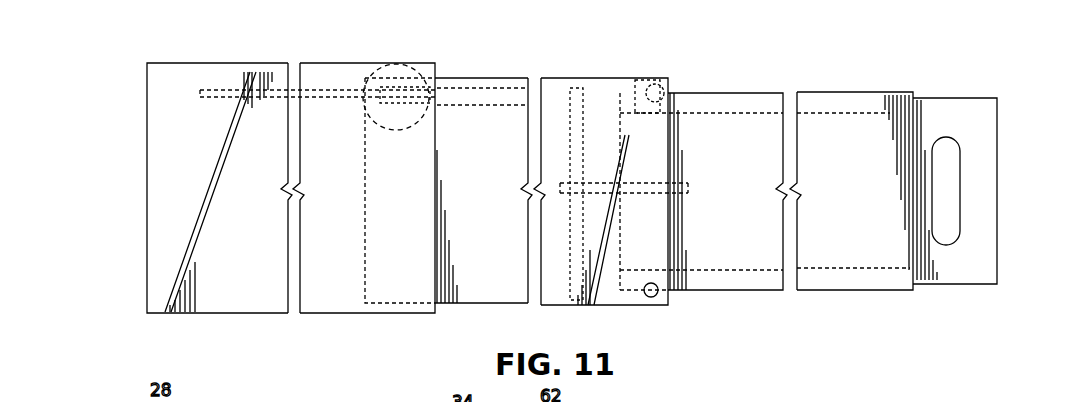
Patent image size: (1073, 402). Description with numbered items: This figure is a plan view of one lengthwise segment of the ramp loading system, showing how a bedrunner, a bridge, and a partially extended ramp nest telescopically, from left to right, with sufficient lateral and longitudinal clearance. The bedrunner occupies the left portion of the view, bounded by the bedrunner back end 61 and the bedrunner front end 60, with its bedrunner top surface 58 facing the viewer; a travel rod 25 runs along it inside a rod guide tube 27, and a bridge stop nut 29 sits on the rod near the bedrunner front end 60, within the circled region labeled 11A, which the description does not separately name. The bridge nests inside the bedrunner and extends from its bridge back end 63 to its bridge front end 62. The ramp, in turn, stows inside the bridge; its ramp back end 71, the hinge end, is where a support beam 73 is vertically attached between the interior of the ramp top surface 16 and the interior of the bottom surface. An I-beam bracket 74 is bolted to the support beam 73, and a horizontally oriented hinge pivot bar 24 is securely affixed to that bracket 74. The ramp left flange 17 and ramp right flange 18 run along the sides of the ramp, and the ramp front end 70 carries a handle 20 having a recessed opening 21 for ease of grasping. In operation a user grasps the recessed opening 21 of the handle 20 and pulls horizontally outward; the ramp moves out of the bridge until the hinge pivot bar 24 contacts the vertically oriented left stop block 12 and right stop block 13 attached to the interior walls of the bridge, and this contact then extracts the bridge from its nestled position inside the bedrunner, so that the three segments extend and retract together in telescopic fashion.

The bedrunner back end 61 is at (147, 178).
The travel rod 25 is at (237, 90).
The bedrunner front end 60 is at (437, 80).
The bridge stop nut 29 is at (400, 90).
The detail region 11A is at (398, 130).
The rod guide tube 27 is at (490, 78).
The hinge pivot bar 24 is at (575, 283).
The I-beam bracket 74 is at (592, 300).
The ramp back end 71 is at (610, 265).
The right stop block 13 is at (668, 88).
The support beam 73 is at (690, 178).
The left stop block 12 is at (658, 300).
The bridge front end 62 is at (672, 297).
The ramp right flange 18 is at (843, 92).
The ramp top surface 16 is at (855, 232).
The ramp left flange 17 is at (865, 290).
The ramp front end 70 is at (930, 100).
The recessed opening 21 is at (965, 182).
The handle 20 is at (965, 286).
The bedrunner top surface 58 is at (237, 262).
The bridge back end 63 is at (362, 240).